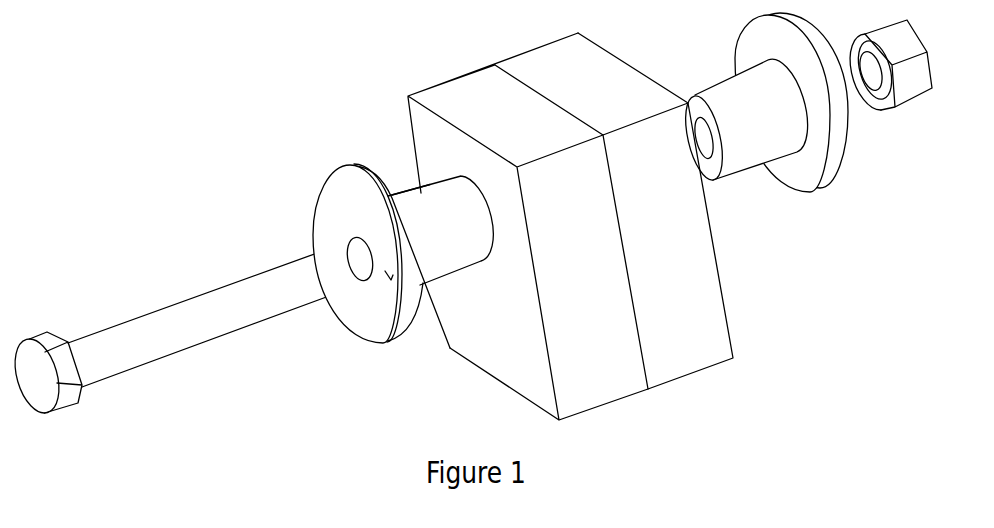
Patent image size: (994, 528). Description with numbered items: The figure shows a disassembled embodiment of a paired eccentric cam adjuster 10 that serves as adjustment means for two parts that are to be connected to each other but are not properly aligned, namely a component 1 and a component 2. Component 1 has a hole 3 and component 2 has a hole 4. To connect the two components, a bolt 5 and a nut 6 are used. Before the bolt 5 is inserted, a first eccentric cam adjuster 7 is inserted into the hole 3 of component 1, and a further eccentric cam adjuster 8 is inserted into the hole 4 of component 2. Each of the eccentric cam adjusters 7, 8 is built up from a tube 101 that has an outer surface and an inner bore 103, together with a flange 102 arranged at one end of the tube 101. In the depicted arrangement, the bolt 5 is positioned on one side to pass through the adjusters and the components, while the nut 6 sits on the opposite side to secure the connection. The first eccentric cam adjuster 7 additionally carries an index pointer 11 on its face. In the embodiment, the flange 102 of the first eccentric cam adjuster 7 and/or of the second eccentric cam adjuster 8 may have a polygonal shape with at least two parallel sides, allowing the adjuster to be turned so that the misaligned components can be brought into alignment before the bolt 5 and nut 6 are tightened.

The paired eccentric cam adjuster 10 is at (234, 49).
The component 1 is at (485, 352).
The component 2 is at (715, 273).
The hole 3 is at (460, 170).
The hole 4 is at (673, 90).
The bolt 5 is at (153, 327).
The nut 6 is at (912, 102).
The first eccentric cam adjuster 7 is at (370, 315).
The further eccentric cam adjuster 8 is at (747, 167).
The index pointer 11 is at (402, 280).
The tube 101 is at (418, 192).
The flange 102 is at (330, 192).
The inner bore 103 is at (352, 256).